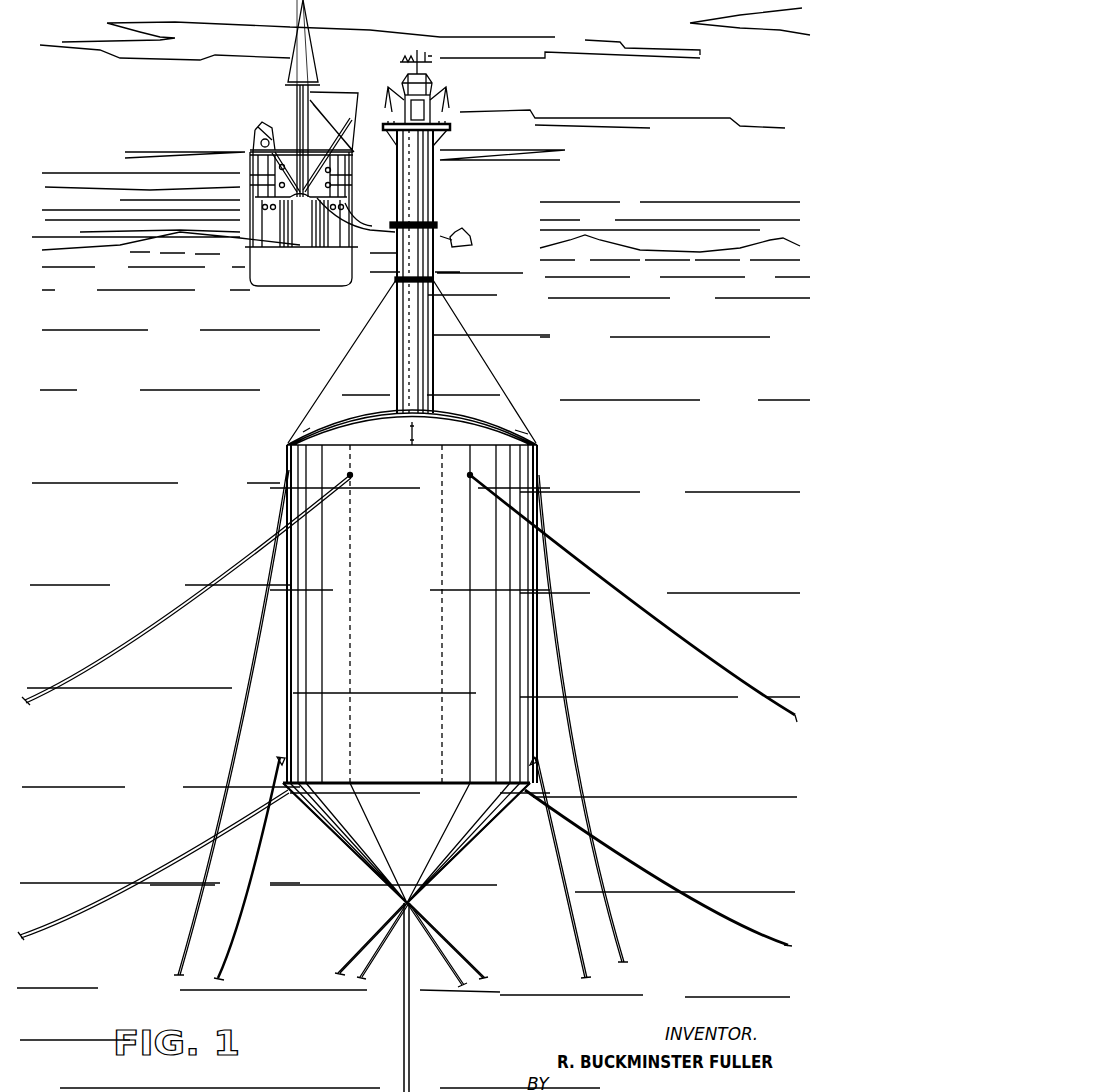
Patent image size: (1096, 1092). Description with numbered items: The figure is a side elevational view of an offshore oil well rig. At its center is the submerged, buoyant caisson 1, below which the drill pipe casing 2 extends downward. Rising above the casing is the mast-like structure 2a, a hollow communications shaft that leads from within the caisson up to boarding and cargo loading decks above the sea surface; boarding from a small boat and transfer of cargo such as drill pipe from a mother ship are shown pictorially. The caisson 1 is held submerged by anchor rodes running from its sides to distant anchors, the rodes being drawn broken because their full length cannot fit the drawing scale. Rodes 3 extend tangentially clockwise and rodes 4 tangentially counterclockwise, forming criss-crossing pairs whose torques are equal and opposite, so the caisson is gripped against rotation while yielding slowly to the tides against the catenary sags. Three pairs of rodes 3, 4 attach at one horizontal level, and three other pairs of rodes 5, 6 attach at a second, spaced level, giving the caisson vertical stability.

The submerged caisson 1 is at (397, 644).
The drill pipe casing 2 is at (403, 1055).
The mast-like structure 2a is at (397, 354).
The rodes 3 is at (160, 618).
The rodes 4 is at (258, 646).
The rodes 5 is at (243, 826).
The rodes 6 is at (247, 893).